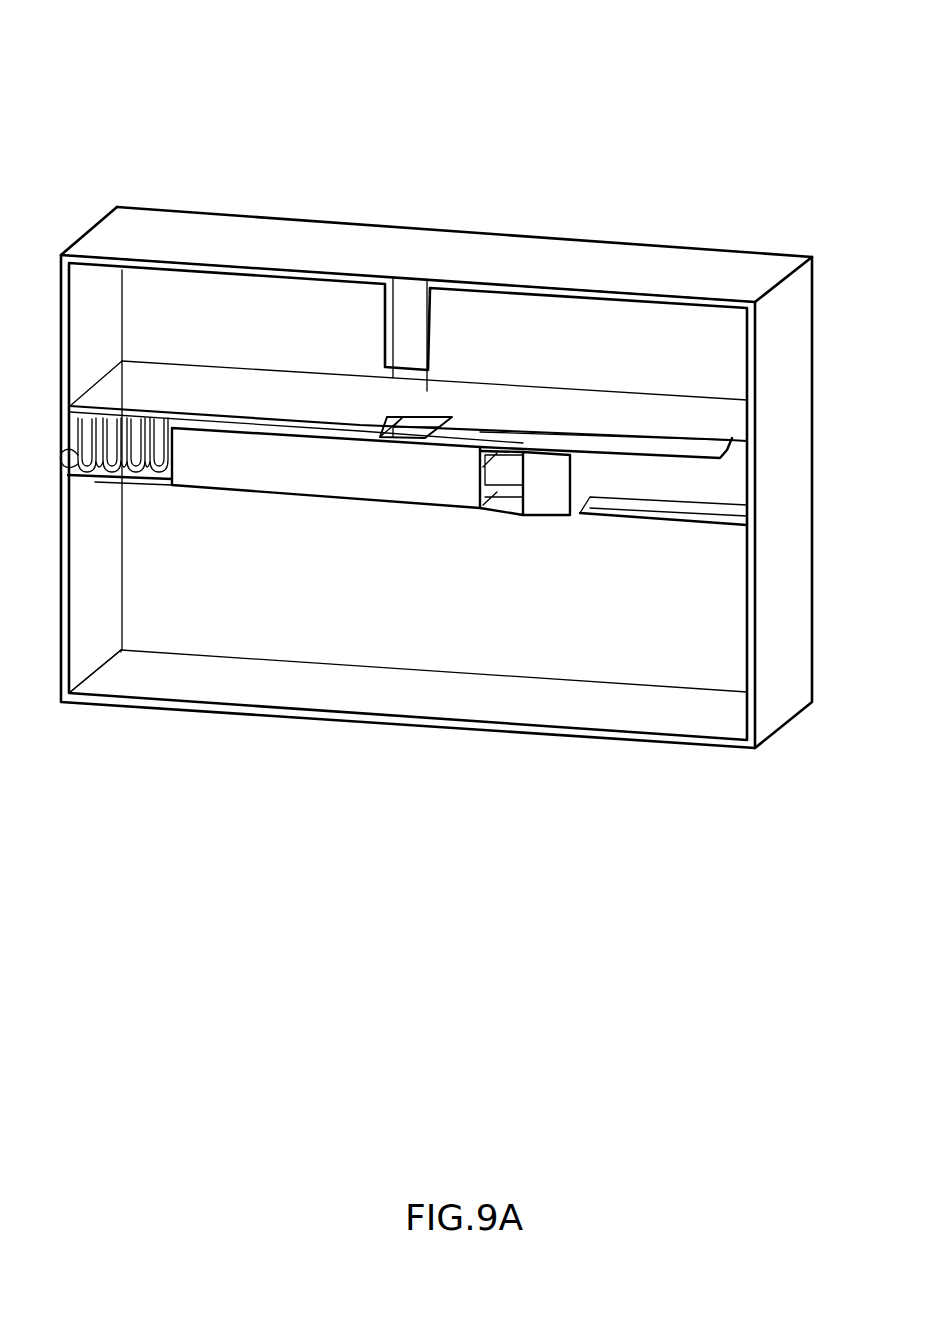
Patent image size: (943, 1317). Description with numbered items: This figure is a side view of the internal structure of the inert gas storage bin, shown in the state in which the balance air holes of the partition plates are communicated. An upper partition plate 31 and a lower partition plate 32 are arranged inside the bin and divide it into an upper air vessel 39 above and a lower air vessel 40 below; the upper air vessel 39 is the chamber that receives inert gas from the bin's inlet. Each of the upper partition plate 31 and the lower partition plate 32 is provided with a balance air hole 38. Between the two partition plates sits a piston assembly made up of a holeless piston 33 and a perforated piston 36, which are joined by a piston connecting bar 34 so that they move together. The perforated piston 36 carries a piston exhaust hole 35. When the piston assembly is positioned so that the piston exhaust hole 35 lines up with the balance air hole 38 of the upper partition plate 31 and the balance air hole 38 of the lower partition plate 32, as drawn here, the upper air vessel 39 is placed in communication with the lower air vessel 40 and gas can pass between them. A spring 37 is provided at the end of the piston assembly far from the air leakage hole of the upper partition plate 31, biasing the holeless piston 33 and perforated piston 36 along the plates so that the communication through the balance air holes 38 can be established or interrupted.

The upper partition plate 31 is at (612, 430).
The lower partition plate 32 is at (652, 512).
The holeless piston 33 is at (578, 447).
The piston connecting bar 34 is at (507, 475).
The piston exhaust hole 35 is at (422, 428).
The perforated piston 36 is at (243, 443).
The spring 37 is at (140, 420).
The balance air hole 38 is at (388, 407).
The upper air vessel 39 is at (322, 330).
The lower air vessel 40 is at (408, 620).